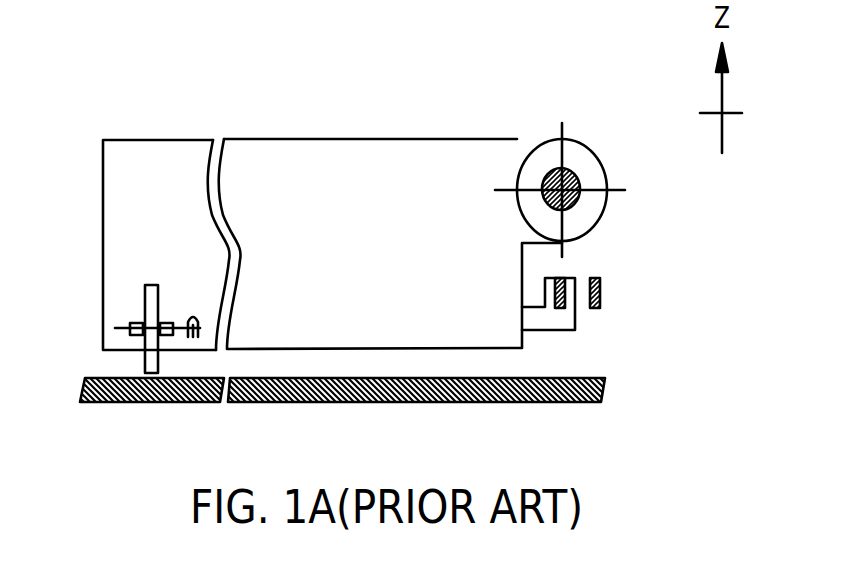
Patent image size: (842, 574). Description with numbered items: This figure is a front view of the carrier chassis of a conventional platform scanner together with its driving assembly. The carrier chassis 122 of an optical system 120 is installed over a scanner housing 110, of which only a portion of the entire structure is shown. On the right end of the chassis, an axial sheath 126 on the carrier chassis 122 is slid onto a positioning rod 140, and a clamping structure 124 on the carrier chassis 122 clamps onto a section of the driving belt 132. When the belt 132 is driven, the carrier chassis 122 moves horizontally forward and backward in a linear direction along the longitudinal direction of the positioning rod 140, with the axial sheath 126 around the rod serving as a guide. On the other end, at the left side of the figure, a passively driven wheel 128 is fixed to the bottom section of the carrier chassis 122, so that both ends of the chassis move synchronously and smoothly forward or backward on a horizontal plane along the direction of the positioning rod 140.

The scanner housing 110 is at (605, 385).
The optical system 120 is at (158, 132).
The carrier chassis 122 is at (198, 150).
The clamping structure 124 is at (560, 322).
The axial sheath 126 is at (582, 153).
The passively driven wheel 128 is at (145, 300).
The belt 132 is at (561, 278).
The positioning rod 140 is at (577, 203).